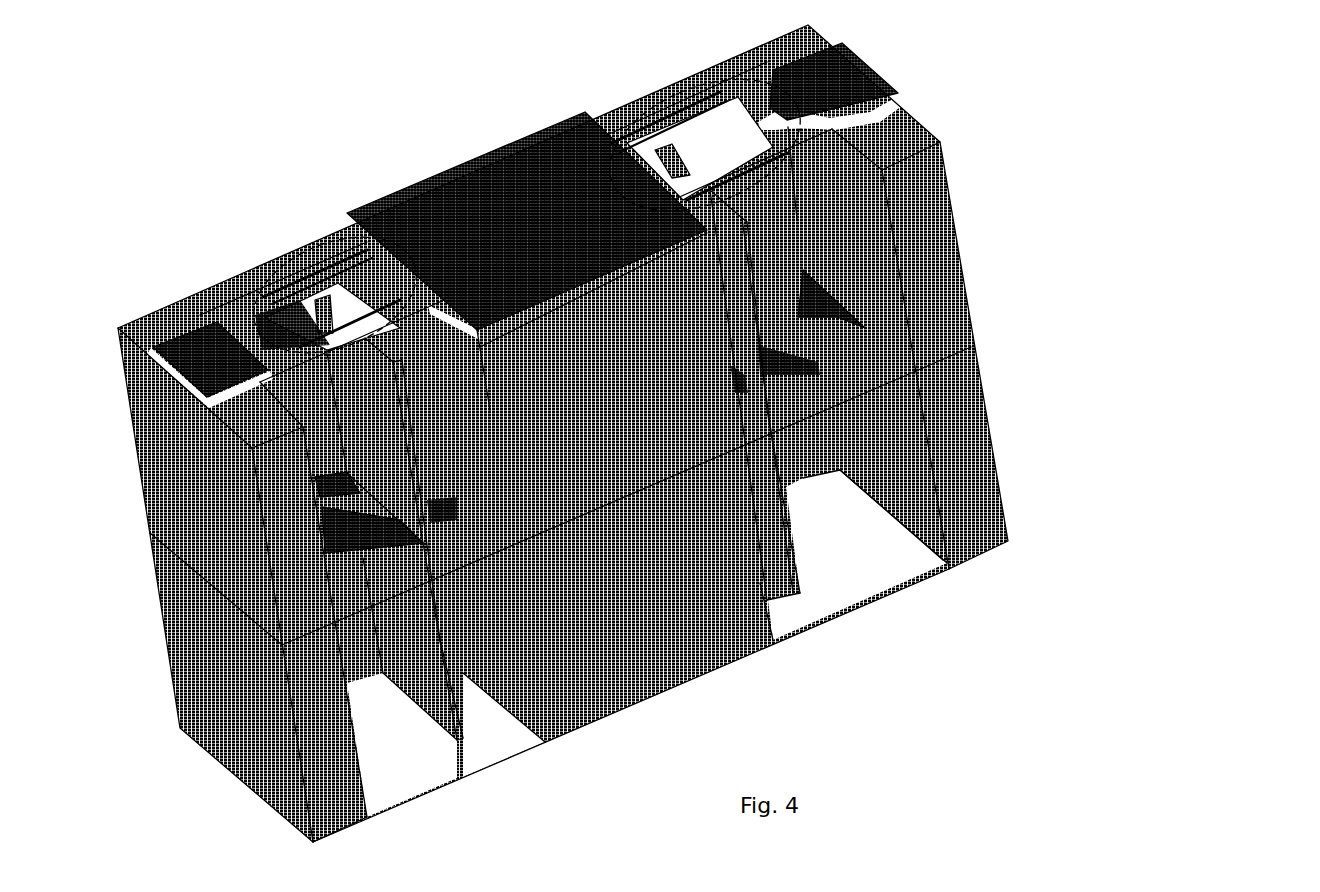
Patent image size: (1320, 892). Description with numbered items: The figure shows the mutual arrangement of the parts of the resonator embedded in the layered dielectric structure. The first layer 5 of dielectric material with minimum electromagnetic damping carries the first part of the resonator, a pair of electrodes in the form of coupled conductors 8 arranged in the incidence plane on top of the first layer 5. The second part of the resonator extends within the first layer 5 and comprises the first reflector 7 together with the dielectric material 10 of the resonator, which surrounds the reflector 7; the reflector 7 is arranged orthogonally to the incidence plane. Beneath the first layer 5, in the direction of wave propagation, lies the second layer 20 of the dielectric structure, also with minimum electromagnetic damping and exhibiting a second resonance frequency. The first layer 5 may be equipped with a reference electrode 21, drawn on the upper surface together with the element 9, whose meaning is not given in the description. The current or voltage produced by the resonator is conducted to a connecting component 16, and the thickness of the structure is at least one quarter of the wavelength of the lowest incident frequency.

The first layer 5 is at (978, 335).
The first reflector 7 is at (409, 421).
The coupled conductors 8 is at (271, 241).
The top plate 9 is at (455, 212).
The dielectric material 10 is at (814, 268).
The connecting component 16 is at (200, 359).
The second layer 20 is at (998, 343).
The reference electrode 21 is at (527, 238).